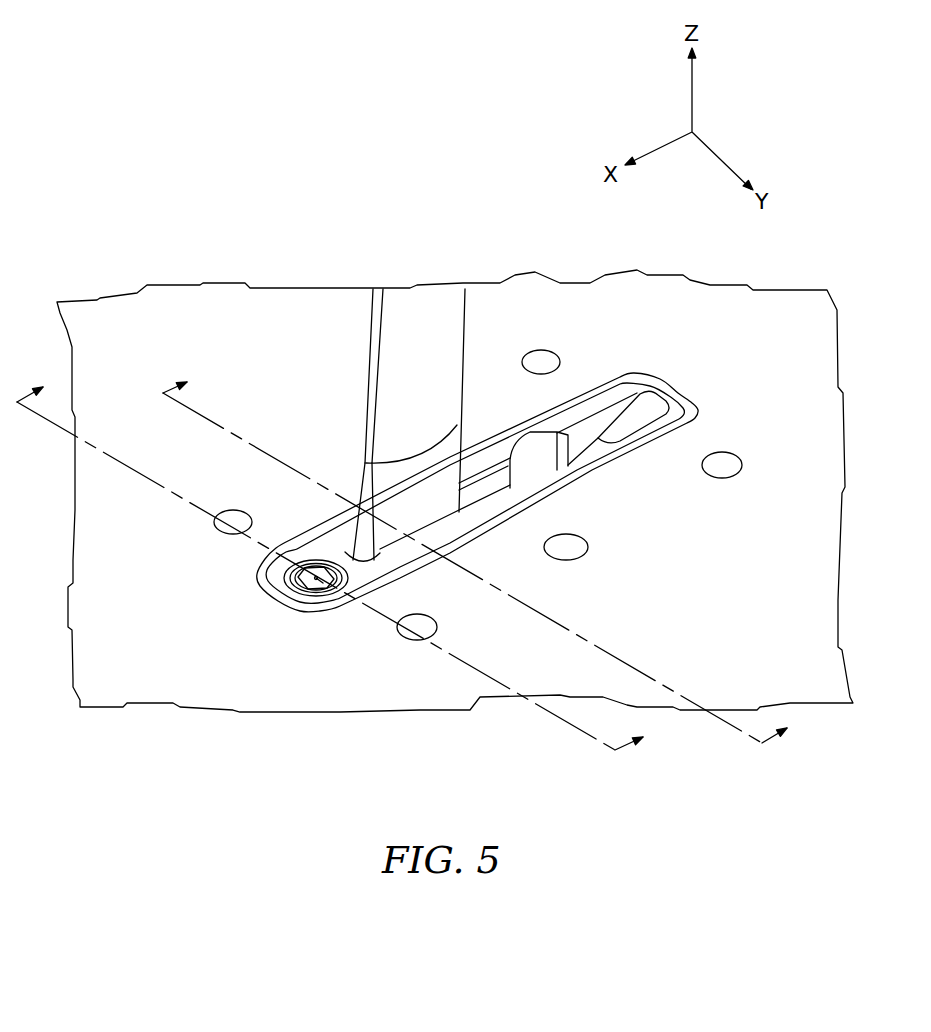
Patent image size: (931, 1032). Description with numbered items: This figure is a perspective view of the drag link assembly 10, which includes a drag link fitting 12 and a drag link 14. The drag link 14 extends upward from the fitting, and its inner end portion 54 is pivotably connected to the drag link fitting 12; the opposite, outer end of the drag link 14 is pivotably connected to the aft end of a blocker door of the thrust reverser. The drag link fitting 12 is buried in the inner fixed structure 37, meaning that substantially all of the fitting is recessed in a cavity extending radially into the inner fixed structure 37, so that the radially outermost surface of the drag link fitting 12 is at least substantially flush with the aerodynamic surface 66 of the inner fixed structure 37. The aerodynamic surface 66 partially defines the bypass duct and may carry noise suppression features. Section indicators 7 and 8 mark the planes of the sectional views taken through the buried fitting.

The drag link assembly 10 is at (477, 429).
The drag link fitting 12 is at (325, 473).
The drag link 14 is at (461, 337).
The inner end portion 54 is at (445, 506).
The inner fixed structure 37 is at (680, 592).
The aerodynamic surface 66 is at (728, 628).
The section line 7- 7 is at (339, 564).
The section line 8- 8 is at (483, 554).